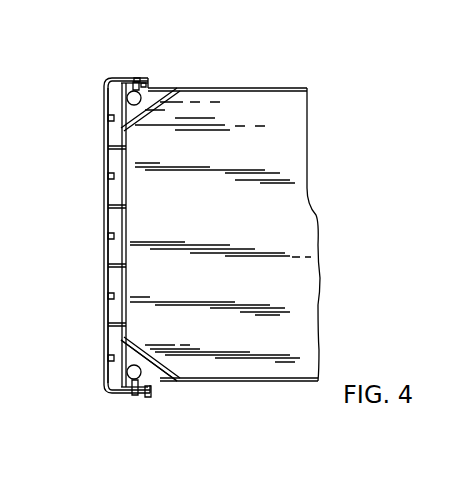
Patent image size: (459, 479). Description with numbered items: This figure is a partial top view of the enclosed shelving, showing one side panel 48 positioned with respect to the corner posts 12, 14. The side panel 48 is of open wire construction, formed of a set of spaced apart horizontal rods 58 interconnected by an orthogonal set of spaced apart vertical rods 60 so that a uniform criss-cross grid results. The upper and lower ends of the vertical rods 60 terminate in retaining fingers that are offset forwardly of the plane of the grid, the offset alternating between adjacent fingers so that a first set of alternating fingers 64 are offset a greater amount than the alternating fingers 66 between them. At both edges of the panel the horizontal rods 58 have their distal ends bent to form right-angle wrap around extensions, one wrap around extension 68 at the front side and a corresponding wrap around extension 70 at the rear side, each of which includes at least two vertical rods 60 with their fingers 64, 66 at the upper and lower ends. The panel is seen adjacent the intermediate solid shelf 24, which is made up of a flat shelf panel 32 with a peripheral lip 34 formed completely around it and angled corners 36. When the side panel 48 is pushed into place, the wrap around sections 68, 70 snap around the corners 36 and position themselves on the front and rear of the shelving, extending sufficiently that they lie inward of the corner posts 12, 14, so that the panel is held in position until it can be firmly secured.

The corner post 12 is at (156, 90).
The corner post 14 is at (136, 371).
The intermediate solid shelf 24 is at (251, 106).
The flat shelf panel 32 is at (303, 133).
The peripheral lip 34 is at (296, 88).
The corners 36 is at (178, 92).
The side panel 48 is at (103, 226).
The horizontal rods 58 is at (108, 280).
The vertical rods 60 is at (109, 79).
The alternating fingers 64 is at (138, 95).
The alternating fingers 66 is at (110, 117).
The wrap around extension 68 is at (134, 397).
The wrap around extension 70 is at (134, 76).